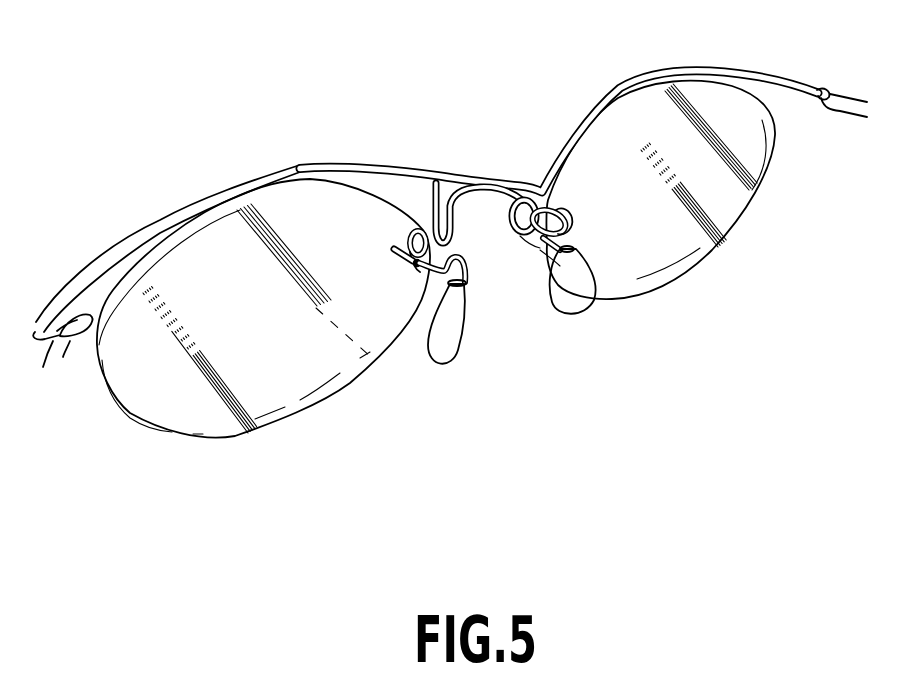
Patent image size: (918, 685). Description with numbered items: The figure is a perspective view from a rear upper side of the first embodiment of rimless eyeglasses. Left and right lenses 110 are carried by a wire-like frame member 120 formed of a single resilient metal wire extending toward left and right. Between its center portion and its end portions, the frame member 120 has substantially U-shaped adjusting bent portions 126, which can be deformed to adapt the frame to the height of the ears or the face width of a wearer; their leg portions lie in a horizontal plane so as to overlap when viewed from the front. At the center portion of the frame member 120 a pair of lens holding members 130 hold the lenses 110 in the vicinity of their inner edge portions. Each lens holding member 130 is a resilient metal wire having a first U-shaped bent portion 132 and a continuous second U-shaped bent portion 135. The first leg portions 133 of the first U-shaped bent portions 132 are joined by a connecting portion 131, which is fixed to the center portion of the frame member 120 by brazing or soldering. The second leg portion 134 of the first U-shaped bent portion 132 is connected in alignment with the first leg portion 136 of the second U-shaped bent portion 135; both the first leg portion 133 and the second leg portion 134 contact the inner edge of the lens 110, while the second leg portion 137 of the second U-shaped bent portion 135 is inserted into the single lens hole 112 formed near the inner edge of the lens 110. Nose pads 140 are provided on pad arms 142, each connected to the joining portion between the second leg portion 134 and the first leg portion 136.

The lens 110 is at (260, 398).
The lens hole 112 is at (412, 265).
The frame member 120 is at (337, 168).
The adjusting bent portion 126 is at (33, 333).
The lens holding member 130 is at (527, 252).
The connecting portion 131 is at (480, 183).
The first U-shaped bent portion 132 is at (402, 215).
The first leg portion 133 is at (557, 214).
The second leg portion 134 is at (523, 233).
The second U-shaped bent portion 135 is at (582, 228).
The first leg portion 136 is at (543, 248).
The second leg portion 137 is at (565, 218).
The nose pad 140 is at (440, 362).
The pad arm 142 is at (478, 263).